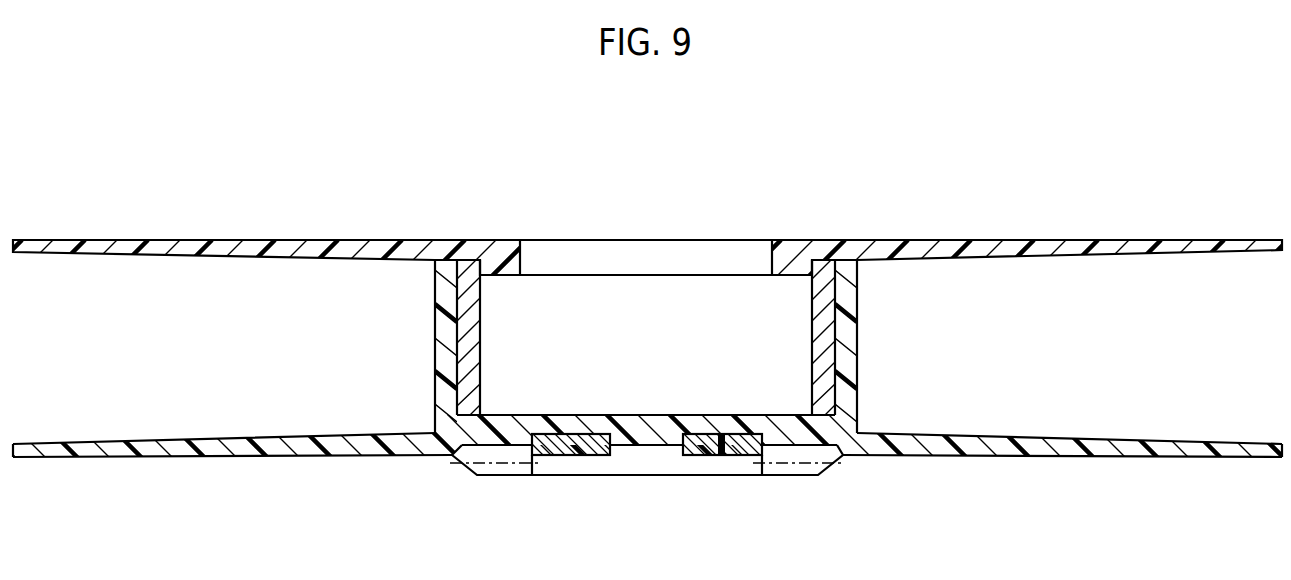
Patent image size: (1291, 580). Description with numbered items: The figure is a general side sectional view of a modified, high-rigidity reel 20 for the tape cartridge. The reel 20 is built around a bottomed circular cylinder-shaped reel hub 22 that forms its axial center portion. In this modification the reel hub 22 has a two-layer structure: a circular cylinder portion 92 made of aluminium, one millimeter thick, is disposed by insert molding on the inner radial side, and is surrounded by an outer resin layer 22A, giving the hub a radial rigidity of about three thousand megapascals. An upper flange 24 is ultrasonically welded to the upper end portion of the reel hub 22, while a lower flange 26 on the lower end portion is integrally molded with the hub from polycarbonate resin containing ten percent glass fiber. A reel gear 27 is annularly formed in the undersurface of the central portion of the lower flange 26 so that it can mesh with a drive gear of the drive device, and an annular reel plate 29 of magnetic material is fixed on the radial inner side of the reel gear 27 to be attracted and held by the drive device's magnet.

The reel 20 is at (941, 141).
The reel hub 22 is at (727, 341).
The outer resin layer 22A is at (851, 327).
The circular cylinder portion 92 is at (840, 372).
The upper flange 24 is at (988, 240).
The lower flange 26 is at (983, 457).
The reel gear 27 is at (503, 470).
The reel plate 29 is at (568, 455).